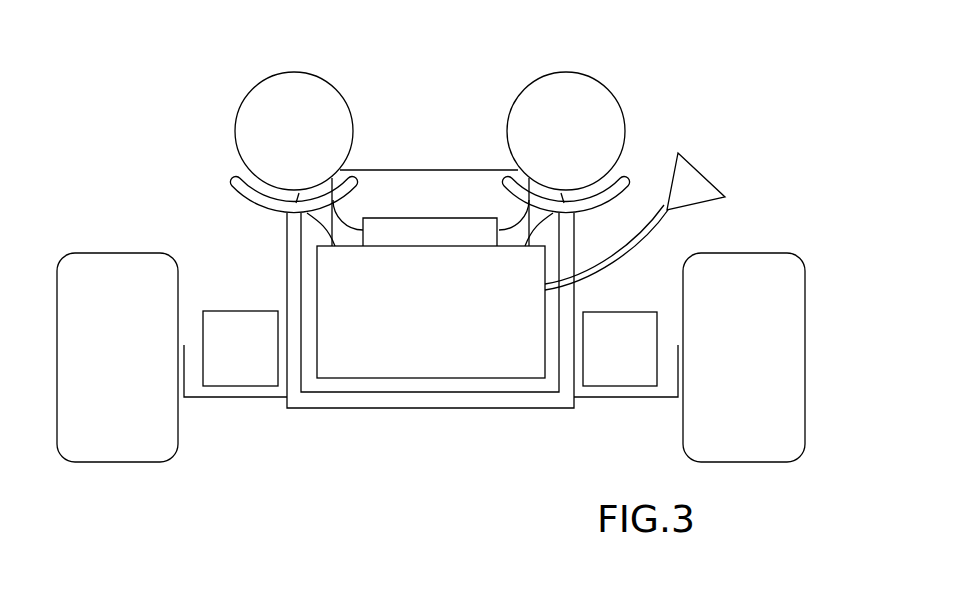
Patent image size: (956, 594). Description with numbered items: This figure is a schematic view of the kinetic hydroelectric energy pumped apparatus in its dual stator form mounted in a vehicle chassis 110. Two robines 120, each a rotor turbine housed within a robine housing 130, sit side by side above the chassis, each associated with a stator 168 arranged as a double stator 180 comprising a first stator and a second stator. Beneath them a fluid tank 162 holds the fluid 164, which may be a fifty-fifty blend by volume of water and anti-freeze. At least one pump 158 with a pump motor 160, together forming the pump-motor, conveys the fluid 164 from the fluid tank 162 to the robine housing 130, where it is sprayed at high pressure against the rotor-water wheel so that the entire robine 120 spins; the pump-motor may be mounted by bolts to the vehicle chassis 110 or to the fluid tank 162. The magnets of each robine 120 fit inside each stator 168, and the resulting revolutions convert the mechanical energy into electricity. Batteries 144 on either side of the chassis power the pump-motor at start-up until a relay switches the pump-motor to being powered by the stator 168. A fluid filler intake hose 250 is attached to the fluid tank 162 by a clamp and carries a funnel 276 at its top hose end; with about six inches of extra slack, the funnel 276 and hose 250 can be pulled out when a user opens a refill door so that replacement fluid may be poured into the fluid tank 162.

The vehicle chassis 110 is at (370, 408).
The robine 120 is at (430, 108).
The robine housing 130 is at (430, 108).
The battery 144 is at (258, 320).
The pump 158 is at (430, 212).
The pump motor 160 is at (382, 232).
The fluid tank 162 is at (431, 346).
The fluid 164 is at (451, 312).
The stator 168 is at (430, 97).
The double stator 180 is at (528, 62).
The fluid filler intake hose 250 is at (657, 240).
The funnel 276 is at (697, 183).